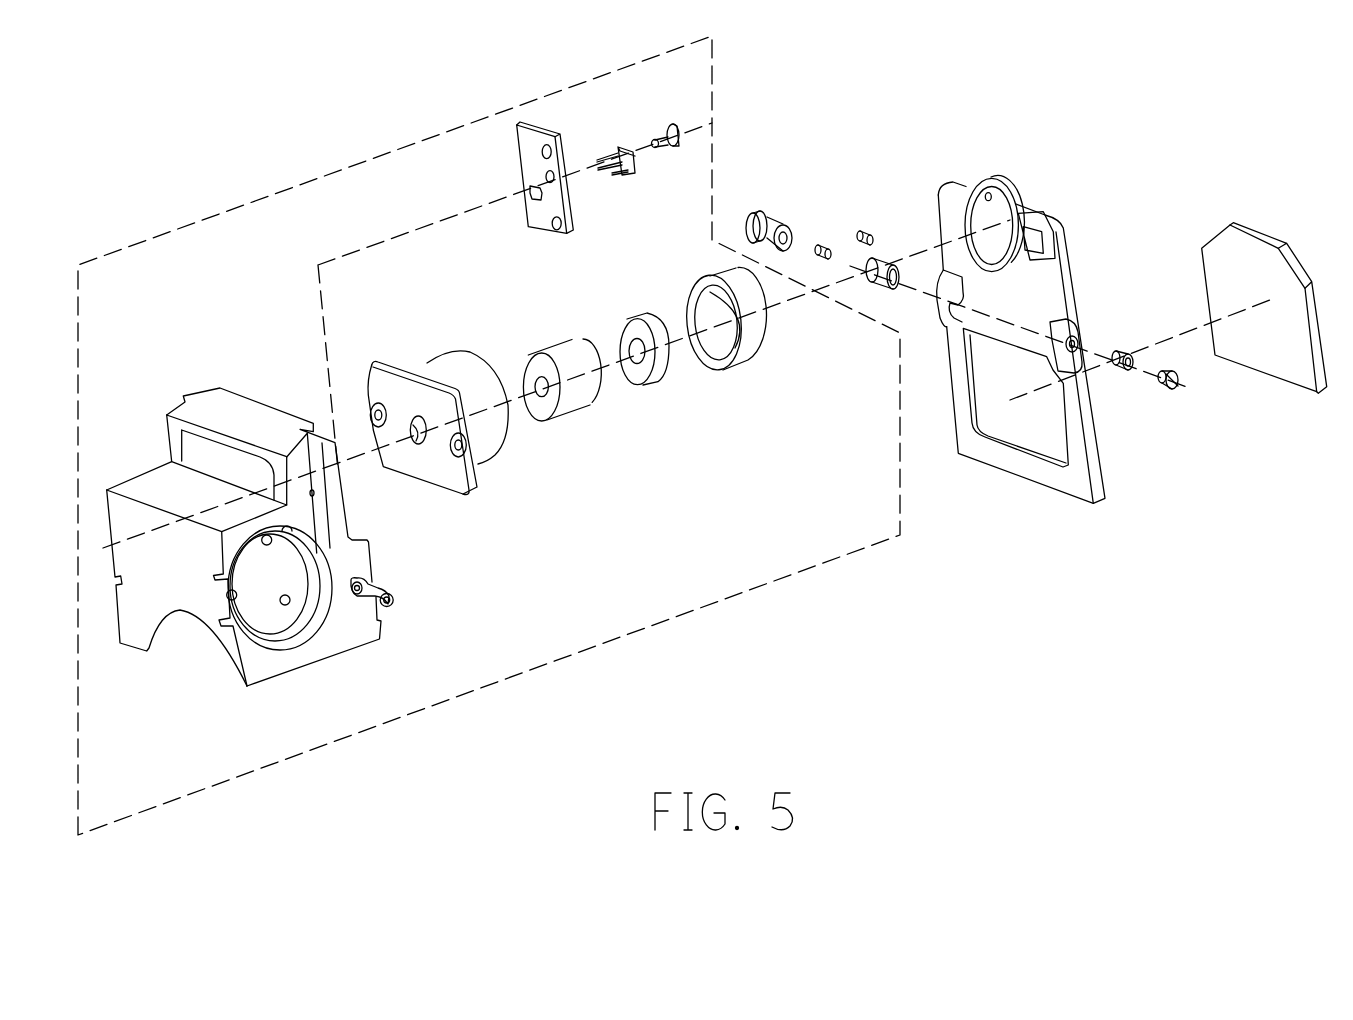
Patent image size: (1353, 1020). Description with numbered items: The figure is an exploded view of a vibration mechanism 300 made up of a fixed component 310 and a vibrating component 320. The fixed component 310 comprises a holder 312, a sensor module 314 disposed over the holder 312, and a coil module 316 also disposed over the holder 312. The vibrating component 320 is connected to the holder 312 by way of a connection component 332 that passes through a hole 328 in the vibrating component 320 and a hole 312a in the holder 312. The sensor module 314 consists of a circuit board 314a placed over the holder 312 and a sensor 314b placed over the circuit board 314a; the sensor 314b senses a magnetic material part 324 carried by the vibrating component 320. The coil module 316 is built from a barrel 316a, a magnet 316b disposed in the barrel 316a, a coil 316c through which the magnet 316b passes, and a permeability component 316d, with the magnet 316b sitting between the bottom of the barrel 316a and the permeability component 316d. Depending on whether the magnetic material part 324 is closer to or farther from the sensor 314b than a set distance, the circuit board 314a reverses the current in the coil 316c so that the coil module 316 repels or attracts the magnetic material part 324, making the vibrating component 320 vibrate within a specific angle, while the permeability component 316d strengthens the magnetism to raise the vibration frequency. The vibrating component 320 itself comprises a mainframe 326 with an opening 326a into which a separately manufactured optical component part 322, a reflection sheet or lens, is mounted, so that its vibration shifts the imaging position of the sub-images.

The vibration mechanism 300 is at (1322, 704).
The fixed component 310 is at (540, 667).
The holder 312 is at (252, 410).
The hole 312a is at (397, 600).
The sensor module 314 is at (610, 38).
The circuit board 314a is at (532, 137).
The sensor 314b is at (623, 147).
The coil module 316 is at (866, 448).
The barrel 316a is at (486, 455).
The magnet 316b is at (580, 400).
The coil 316c is at (765, 340).
The permeability component 316d is at (668, 366).
The vibrating component 320 is at (1302, 537).
The optical component part 322 is at (1267, 353).
The magnetic material part 324 is at (978, 187).
The mainframe 326 is at (1093, 447).
The opening 326a is at (1037, 417).
The hole 328 is at (1079, 342).
The connection component 332 is at (914, 235).